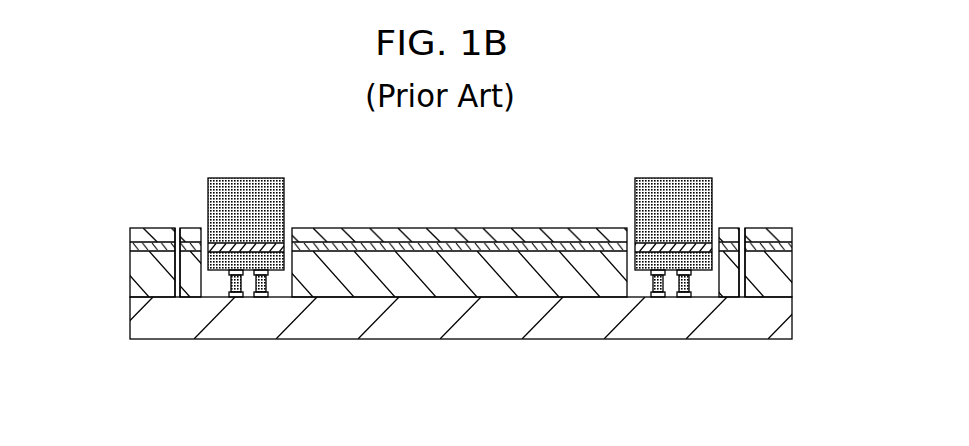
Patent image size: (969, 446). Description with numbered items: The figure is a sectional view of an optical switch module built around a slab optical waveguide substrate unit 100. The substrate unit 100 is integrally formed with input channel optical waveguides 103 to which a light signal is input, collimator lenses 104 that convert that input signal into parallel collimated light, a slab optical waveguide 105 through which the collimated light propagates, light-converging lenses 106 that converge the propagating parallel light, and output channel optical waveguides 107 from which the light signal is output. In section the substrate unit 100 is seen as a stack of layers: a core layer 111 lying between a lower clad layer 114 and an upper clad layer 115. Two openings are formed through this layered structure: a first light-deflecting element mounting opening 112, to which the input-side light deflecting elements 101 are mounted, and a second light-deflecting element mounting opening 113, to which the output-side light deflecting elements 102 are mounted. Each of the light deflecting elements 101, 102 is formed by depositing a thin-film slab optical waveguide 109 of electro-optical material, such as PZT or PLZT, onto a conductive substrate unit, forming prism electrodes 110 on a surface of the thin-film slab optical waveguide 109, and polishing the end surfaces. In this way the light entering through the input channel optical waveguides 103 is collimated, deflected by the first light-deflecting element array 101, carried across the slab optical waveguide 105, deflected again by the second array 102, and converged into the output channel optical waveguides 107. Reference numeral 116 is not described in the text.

The slab optical waveguide substrate unit 100 is at (593, 117).
The input-side light deflecting elements 101 is at (252, 176).
The output-side light deflecting elements 102 is at (670, 176).
The input channel optical waveguides 103 is at (141, 225).
The collimator lenses 104 is at (177, 225).
The slab optical waveguide 105 is at (470, 226).
The light-converging lenses 106 is at (744, 225).
The output channel optical waveguides 107 is at (777, 225).
The thin-film slab optical waveguide 109 is at (216, 265).
The prism electrodes 110 is at (278, 276).
The core layer 111 is at (130, 247).
The first light-deflecting element mounting opening 112 is at (222, 290).
The second light-deflecting element mounting opening 113 is at (637, 283).
The lower clad layer 114 is at (133, 270).
The upper clad layer 115 is at (128, 235).
The bump pillar 116 is at (265, 287).